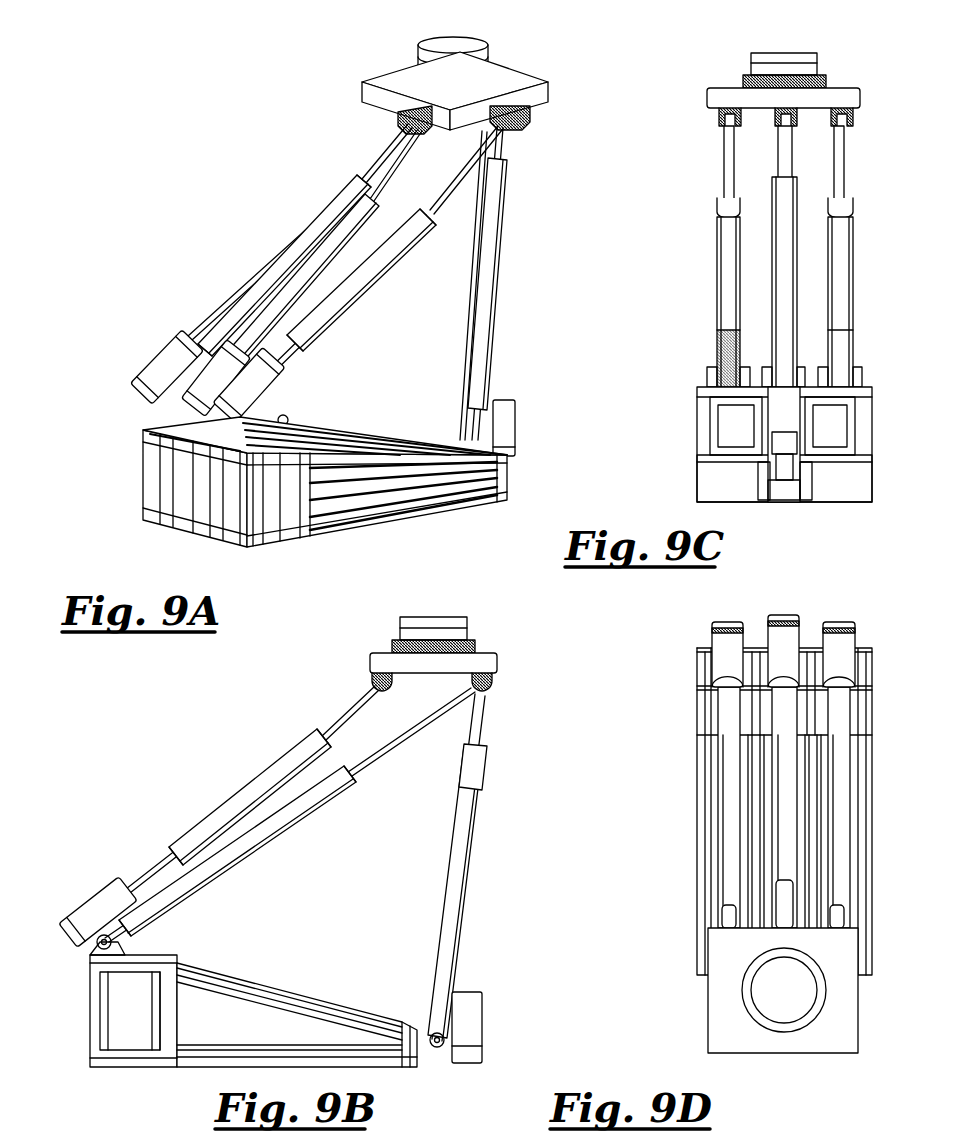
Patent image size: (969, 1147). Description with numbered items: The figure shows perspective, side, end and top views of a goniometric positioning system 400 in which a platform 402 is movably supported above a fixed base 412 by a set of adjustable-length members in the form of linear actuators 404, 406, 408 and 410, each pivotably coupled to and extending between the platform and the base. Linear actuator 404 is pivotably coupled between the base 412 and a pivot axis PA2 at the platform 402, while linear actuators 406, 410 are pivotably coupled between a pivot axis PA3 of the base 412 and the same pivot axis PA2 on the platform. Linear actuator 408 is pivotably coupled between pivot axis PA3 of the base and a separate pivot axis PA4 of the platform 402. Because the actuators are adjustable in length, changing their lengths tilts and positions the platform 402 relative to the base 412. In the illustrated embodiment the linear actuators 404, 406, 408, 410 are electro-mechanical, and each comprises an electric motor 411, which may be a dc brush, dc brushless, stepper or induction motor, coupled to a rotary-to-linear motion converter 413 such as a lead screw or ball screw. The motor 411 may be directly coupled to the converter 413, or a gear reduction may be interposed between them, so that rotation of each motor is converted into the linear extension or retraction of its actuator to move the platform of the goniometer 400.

In FIG. 9A, the goniometric positioning system 400 is at (226, 182).
In FIG. 9C, the goniometric positioning system 400 is at (692, 56).
In FIG. 9B, the goniometric positioning system 400 is at (208, 748).
In FIG. 9D, the goniometric positioning system 400 is at (682, 630).
In FIG. 9A, the platform 402 is at (435, 49).
In FIG. 9C, the platform 402 is at (770, 54).
In FIG. 9B, the platform 402 is at (436, 617).
In FIG. 9D, the platform 402 is at (826, 990).
In FIG. 9A, the linear actuator 404 is at (467, 340).
In FIG. 9C, the linear actuator 404 is at (778, 502).
In FIG. 9B, the linear actuator 404 is at (442, 884).
In FIG. 9A, the linear actuator 406 is at (250, 292).
In FIG. 9C, the linear actuator 406 is at (853, 244).
In FIG. 9B, the linear actuator 406 is at (336, 755).
In FIG. 9D, the linear actuator 406 is at (845, 870).
In FIG. 9A, the linear actuator 408 is at (360, 178).
In FIG. 9C, the linear actuator 408 is at (853, 280).
In FIG. 9B, the linear actuator 408 is at (283, 737).
In FIG. 9D, the linear actuator 408 is at (798, 780).
In FIG. 9A, the linear actuator 410 is at (337, 335).
In FIG. 9C, the linear actuator 410 is at (717, 270).
In FIG. 9B, the linear actuator 410 is at (255, 883).
In FIG. 9D, the linear actuator 410 is at (717, 762).
In FIG. 9A, the electric motor 411 is at (164, 345).
In FIG. 9C, the electric motor 411 is at (798, 486).
In FIG. 9B, the electric motor 411 is at (137, 876).
In FIG. 9D, the electric motor 411 is at (748, 638).
In FIG. 9A, the fixed base 412 is at (143, 470).
In FIG. 9C, the fixed base 412 is at (697, 483).
In FIG. 9B, the fixed base 412 is at (90, 1044).
In FIG. 9D, the fixed base 412 is at (784, 811).
In FIG. 9A, the rotary-to-linear motion converter 413 is at (315, 207).
In FIG. 9C, the rotary-to-linear motion converter 413 is at (772, 240).
In FIG. 9B, the rotary-to-linear motion converter 413 is at (214, 830).
In FIG. 9D, the rotary-to-linear motion converter 413 is at (770, 811).
In FIG. 9A, the pivot axis PA2 is at (547, 124).
In FIG. 9A, the pivot axis PA3 is at (282, 420).
In FIG. 9A, the pivot axis PA4 is at (405, 124).